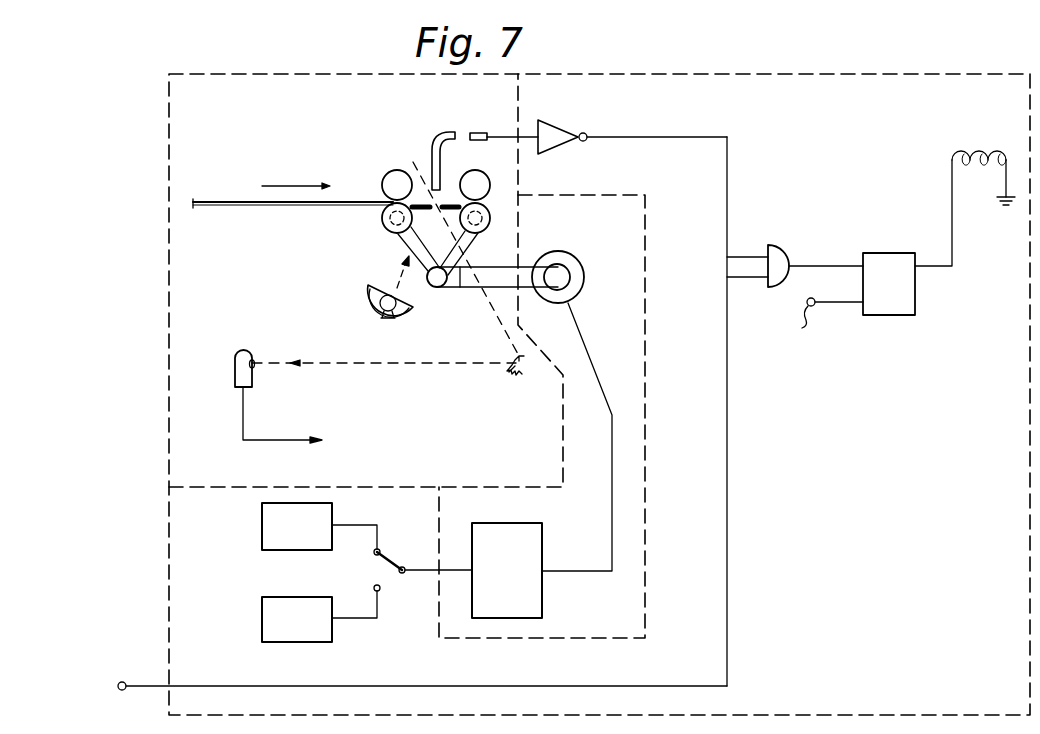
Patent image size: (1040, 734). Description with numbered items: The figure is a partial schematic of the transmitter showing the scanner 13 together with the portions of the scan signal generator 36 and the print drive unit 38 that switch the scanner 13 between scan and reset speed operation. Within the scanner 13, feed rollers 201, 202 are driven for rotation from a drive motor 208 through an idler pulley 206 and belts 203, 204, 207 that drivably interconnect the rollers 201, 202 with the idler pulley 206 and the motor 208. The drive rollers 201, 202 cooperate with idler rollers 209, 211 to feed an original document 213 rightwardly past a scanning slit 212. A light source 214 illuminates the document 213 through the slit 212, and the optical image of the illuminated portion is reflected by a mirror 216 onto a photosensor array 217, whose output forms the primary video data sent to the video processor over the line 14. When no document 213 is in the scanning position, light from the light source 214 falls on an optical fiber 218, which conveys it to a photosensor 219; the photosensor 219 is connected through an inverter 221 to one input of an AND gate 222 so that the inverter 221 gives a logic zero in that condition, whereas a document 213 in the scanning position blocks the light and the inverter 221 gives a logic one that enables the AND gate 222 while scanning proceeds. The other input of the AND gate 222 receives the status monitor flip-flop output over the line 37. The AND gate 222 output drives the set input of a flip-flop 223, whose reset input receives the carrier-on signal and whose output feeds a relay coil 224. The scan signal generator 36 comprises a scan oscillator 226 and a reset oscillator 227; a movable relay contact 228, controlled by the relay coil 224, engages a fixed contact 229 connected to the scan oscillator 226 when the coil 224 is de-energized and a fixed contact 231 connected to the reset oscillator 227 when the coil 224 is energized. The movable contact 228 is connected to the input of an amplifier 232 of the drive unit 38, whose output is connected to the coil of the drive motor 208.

The scanner 13 is at (262, 255).
The line 14 is at (288, 439).
The scan signal generator 36 is at (897, 537).
The line 37 is at (430, 676).
The print drive unit 38 is at (590, 231).
The feed roller 201 is at (382, 221).
The feed roller 202 is at (472, 232).
The belt 203 is at (398, 237).
The belt 204 is at (453, 291).
The idler pulley 206 is at (437, 288).
The belt 207 is at (528, 288).
The drive motor 208 is at (585, 276).
The idler roller 209 is at (385, 180).
The idler roller 211 is at (465, 178).
The scanning slit 212 is at (452, 246).
The original document 213 is at (217, 200).
The light source 214 is at (368, 308).
The mirror 216 is at (516, 378).
The photosensor array 217 is at (234, 370).
The optical fiber 218 is at (444, 129).
The photosensor 219 is at (479, 131).
The inverter 221 is at (585, 114).
The AND gate 222 is at (786, 256).
The flip-flop 223 is at (885, 253).
The relay coil 224 is at (975, 153).
The scan oscillator 226 is at (262, 526).
The reset oscillator 227 is at (262, 618).
The movable relay contact 228 is at (386, 560).
The fixed contact 229 is at (372, 553).
The fixed contact 231 is at (380, 590).
The amplifier 232 is at (542, 539).